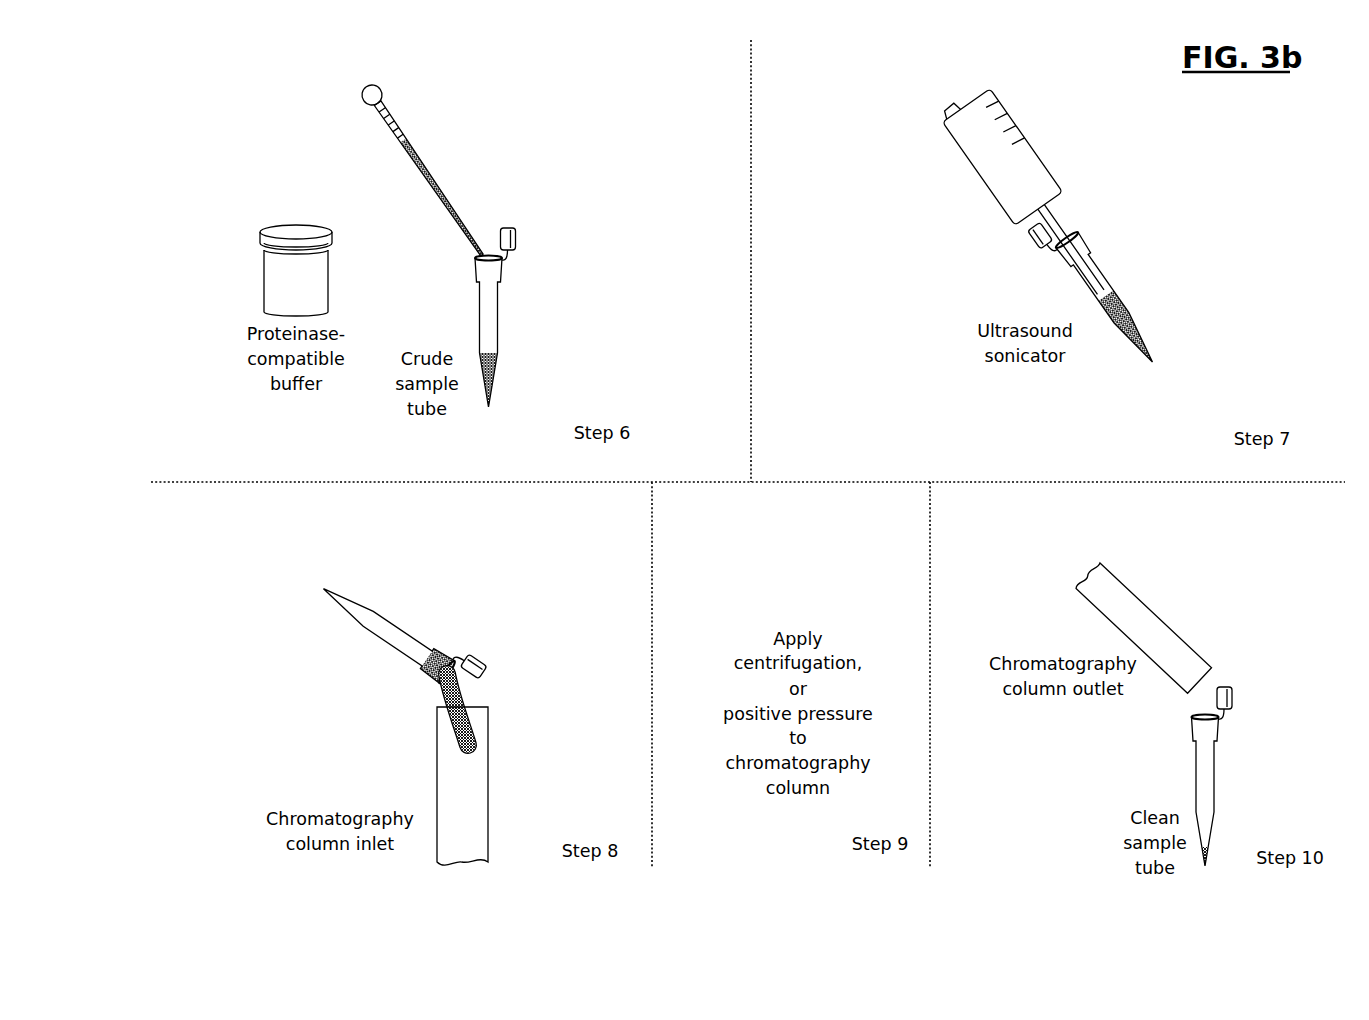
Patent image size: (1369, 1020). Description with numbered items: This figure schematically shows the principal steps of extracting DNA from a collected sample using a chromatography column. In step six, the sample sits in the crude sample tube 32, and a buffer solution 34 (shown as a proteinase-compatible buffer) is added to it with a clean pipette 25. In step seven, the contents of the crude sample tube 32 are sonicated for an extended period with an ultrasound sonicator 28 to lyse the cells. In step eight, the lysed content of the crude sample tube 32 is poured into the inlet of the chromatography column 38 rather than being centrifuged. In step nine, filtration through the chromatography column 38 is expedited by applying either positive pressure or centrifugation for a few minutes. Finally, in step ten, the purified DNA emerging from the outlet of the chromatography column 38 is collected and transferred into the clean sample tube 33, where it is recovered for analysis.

The pipette 25 is at (397, 146).
The ultrasound sonicator 28 is at (998, 178).
The crude sample tube 32 is at (477, 303).
The clean sample tube 33 is at (1208, 782).
The proteinase-compatible buffer 34 is at (283, 295).
The chromatography column 38 is at (477, 797).